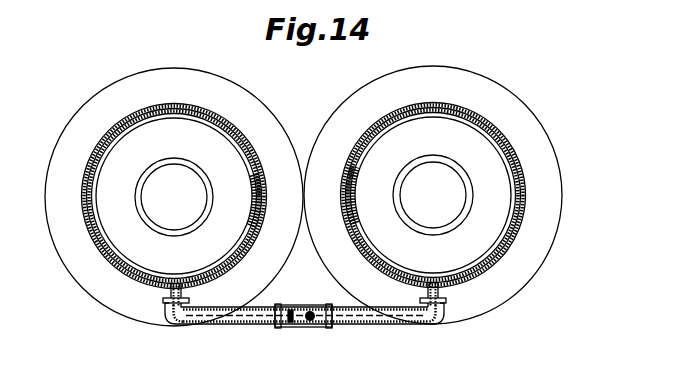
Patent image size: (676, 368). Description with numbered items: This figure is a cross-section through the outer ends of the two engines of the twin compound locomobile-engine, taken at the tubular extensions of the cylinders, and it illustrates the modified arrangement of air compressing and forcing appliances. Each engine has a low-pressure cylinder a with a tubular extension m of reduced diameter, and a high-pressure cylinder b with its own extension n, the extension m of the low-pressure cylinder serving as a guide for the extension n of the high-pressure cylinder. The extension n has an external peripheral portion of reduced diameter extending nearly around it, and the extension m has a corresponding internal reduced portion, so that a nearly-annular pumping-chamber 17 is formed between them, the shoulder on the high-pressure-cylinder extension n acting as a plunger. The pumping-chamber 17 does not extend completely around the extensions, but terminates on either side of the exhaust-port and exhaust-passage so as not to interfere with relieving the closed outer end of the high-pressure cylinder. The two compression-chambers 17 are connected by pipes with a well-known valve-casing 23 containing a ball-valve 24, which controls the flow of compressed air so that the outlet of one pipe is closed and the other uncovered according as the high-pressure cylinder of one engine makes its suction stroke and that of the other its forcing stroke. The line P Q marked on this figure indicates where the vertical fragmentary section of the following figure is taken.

The low-pressure cylinder a is at (303, 196).
The high-pressure cylinder b is at (304, 195).
The extension of the low-pressure cylinder m is at (177, 104).
The extension of the high-pressure cylinder n is at (102, 165).
The pumping-chamber 17 is at (243, 252).
The section line point P is at (172, 273).
The section line point Q is at (435, 273).
The valve-casing 23 is at (305, 327).
The ball-valve 24 is at (314, 304).